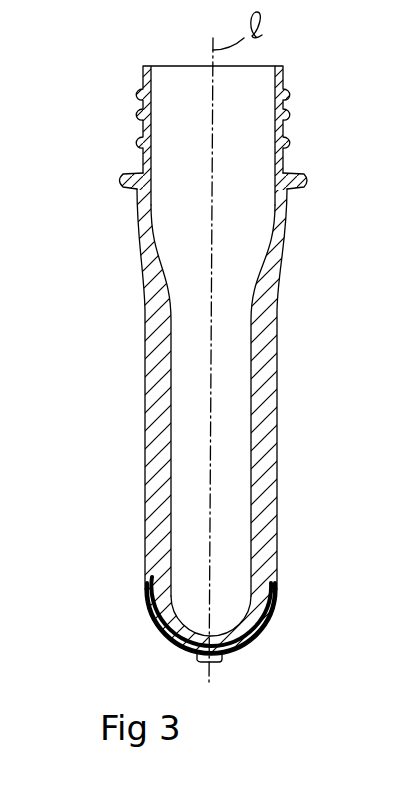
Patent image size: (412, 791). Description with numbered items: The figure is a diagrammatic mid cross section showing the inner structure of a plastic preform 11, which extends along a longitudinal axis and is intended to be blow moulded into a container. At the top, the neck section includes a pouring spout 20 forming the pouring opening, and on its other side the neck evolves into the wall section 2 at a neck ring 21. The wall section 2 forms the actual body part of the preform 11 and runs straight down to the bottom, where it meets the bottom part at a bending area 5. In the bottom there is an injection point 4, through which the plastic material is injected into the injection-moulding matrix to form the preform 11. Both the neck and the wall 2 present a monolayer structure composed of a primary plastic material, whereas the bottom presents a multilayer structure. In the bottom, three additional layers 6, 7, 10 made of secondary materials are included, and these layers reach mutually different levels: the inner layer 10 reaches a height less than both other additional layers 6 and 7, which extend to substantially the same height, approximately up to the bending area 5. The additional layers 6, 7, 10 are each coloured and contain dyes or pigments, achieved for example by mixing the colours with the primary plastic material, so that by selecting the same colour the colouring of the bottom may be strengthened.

The preform 11 is at (305, 307).
The pouring spout 20 is at (172, 64).
The neck ring 21 is at (124, 181).
The wall section 2 is at (145, 328).
The bending area 5 is at (143, 578).
The inner layer 10 is at (232, 623).
The additional layer 7 is at (272, 578).
The additional layer 6 is at (273, 600).
The injection point 4 is at (217, 660).